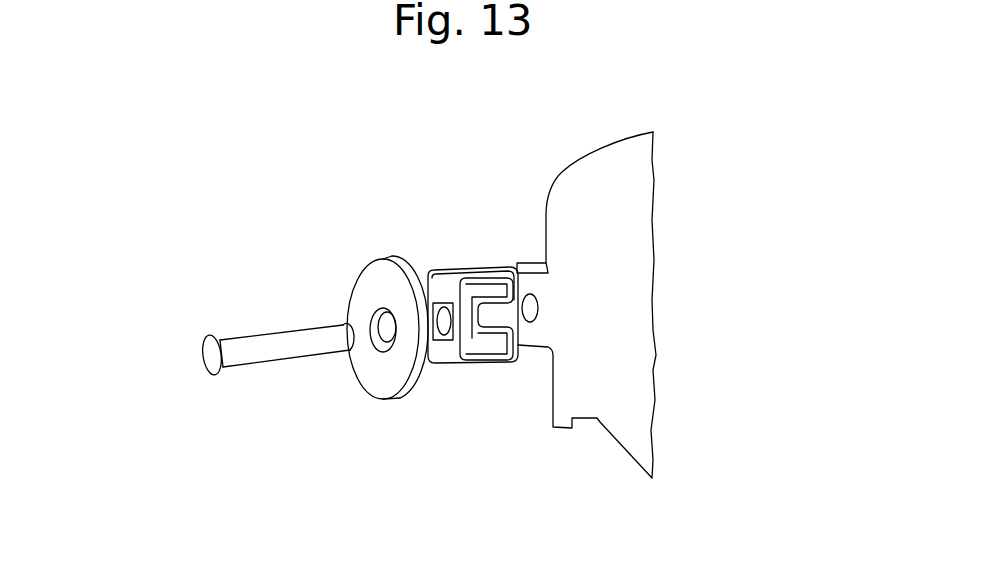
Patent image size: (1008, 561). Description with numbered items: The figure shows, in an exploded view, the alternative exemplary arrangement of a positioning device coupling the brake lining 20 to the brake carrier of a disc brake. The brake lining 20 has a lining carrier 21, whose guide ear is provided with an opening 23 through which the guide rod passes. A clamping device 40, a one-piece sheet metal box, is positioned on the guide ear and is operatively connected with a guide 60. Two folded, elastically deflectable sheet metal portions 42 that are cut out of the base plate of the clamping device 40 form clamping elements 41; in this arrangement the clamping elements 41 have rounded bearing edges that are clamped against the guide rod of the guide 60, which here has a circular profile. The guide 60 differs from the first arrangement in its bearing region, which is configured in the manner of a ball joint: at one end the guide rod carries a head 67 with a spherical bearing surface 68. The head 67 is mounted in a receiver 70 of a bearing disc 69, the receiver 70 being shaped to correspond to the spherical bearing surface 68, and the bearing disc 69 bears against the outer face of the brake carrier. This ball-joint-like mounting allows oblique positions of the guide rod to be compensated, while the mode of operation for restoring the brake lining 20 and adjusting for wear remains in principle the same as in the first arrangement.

The brake lining 20 is at (697, 303).
The lining carrier 21 is at (298, 347).
The opening 23 is at (520, 278).
The clamping device 40 is at (457, 258).
The clamping element 41 is at (453, 350).
The sheet metal portion 42 is at (447, 312).
The guide 60 is at (240, 327).
The head 67 is at (203, 363).
The spherical bearing surface 68 is at (223, 358).
The bearing disc 69 is at (412, 358).
The receiver 70 is at (377, 340).